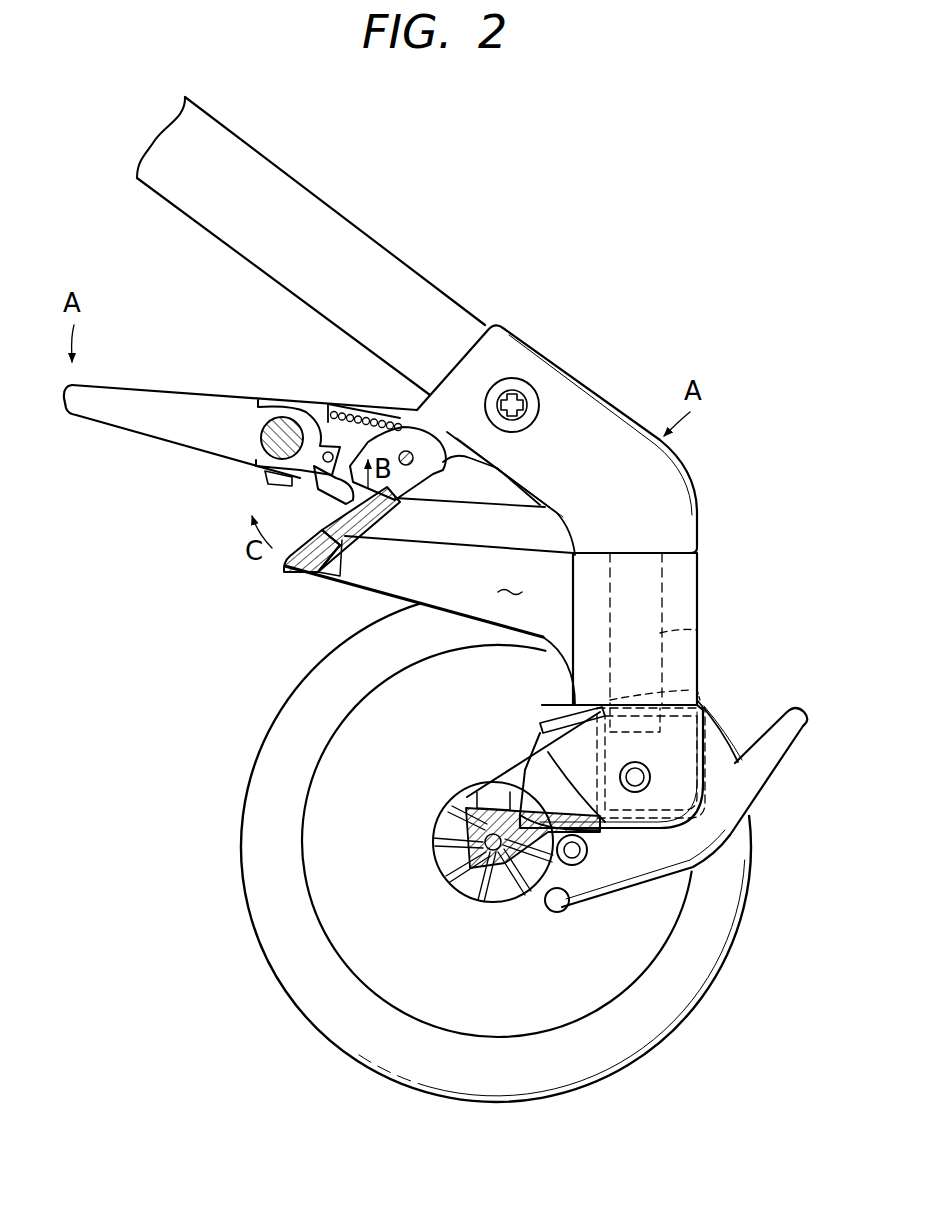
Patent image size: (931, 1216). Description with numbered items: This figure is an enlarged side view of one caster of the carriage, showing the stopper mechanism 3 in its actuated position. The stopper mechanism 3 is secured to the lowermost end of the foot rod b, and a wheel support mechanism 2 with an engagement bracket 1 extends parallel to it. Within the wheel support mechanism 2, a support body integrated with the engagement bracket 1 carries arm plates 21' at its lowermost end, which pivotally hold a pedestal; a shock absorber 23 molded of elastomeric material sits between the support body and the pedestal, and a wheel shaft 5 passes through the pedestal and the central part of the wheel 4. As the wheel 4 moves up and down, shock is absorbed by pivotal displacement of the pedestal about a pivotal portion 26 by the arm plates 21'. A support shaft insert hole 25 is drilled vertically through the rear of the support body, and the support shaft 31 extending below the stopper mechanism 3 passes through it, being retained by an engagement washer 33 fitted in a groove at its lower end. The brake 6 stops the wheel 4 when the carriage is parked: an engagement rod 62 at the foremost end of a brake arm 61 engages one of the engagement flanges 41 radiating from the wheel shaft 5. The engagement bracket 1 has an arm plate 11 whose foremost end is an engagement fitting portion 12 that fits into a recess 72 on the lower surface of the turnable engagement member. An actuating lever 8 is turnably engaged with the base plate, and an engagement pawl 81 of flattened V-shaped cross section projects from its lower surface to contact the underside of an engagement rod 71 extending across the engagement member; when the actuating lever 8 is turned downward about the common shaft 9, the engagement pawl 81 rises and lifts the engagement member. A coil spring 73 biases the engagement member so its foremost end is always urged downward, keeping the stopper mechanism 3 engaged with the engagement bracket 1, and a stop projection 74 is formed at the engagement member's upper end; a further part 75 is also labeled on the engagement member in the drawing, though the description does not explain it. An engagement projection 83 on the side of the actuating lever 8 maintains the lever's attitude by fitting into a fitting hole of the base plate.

The rear foot rod b is at (240, 146).
The engagement bracket 1 is at (597, 629).
The wheel support mechanism 2 is at (540, 642).
The stopper mechanism 3 is at (530, 348).
The wheel 4 is at (262, 908).
The wheel shaft 5 is at (447, 849).
The brake 6 is at (740, 830).
The actuating lever 8 is at (148, 396).
The common shaft 9 is at (262, 456).
The arm plate 11 is at (436, 590).
The engagement fitting portion 12 is at (340, 580).
The arm plates 21' is at (564, 717).
The shock absorber 23 is at (516, 770).
The support shaft insert hole 25 is at (665, 632).
The pivotal portion 26 is at (645, 777).
The support shaft 31 is at (655, 590).
The engagement washer 33 is at (697, 690).
The engagement flanges 41 is at (524, 872).
The brake arm 61 is at (722, 870).
The engagement rod 62 is at (566, 910).
The engagement rod 71 is at (397, 508).
The recess 72 is at (304, 574).
The coil spring 73 is at (347, 412).
The stop projection 74 is at (497, 463).
The pawl 75 is at (412, 452).
The engagement pawl 81 is at (318, 498).
The engagement projection 83 is at (322, 444).